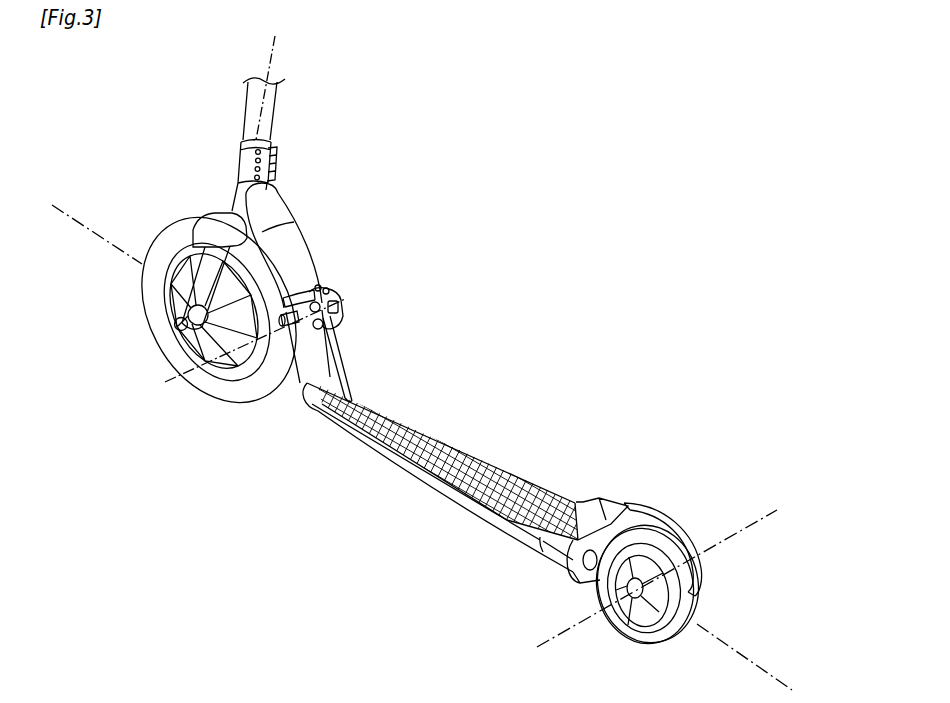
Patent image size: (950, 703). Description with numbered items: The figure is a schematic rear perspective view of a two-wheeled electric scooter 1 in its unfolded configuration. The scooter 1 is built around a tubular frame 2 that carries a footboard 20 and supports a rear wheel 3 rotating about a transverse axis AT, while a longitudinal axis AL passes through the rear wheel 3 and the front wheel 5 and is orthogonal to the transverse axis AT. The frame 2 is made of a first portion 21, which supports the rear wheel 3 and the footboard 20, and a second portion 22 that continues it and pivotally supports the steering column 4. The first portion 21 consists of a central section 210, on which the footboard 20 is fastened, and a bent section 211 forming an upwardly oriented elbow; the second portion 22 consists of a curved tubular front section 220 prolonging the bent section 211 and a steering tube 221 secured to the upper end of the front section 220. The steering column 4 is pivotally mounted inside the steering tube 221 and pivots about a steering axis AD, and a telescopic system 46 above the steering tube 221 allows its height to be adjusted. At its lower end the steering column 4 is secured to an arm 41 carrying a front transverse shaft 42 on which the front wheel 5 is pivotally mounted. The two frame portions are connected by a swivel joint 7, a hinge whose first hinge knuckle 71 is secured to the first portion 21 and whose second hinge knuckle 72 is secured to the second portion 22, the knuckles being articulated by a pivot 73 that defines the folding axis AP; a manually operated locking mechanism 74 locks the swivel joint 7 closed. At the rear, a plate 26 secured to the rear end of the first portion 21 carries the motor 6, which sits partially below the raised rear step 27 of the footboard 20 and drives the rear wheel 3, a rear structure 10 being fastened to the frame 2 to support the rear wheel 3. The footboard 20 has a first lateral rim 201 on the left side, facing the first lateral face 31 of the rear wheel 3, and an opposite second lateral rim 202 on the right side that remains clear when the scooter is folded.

The scooter 1 is at (587, 246).
The frame 2 is at (442, 475).
The rear wheel 3 is at (647, 609).
The steering column 4 is at (281, 107).
The front wheel 5 is at (164, 229).
The motor 6 is at (600, 506).
The swivel joint 7 is at (334, 279).
The rear structure 10 is at (651, 509).
The footboard 20 is at (481, 465).
The first portion 21 is at (387, 464).
The second portion 22 is at (273, 197).
The plate 26 is at (579, 578).
The rear step 27 is at (582, 507).
The first lateral face 31 is at (634, 614).
The arm 41 is at (196, 302).
The front transverse shaft 42 is at (183, 325).
The telescopic system 46 is at (242, 157).
The first hinge knuckle 71 is at (331, 324).
The second hinge knuckle 72 is at (311, 292).
The pivot 73 is at (335, 350).
The locking mechanism 74 is at (343, 311).
The first lateral rim 201 is at (428, 488).
The second lateral rim 202 is at (444, 425).
The central section 210 is at (346, 433).
The bent section 211 is at (309, 385).
The front section 220 is at (283, 229).
The steering tube 221 is at (239, 182).
The steering axis AD is at (273, 48).
The folding axis AP is at (346, 299).
The transverse axis AT is at (556, 642).
The longitudinal axis AL is at (789, 686).